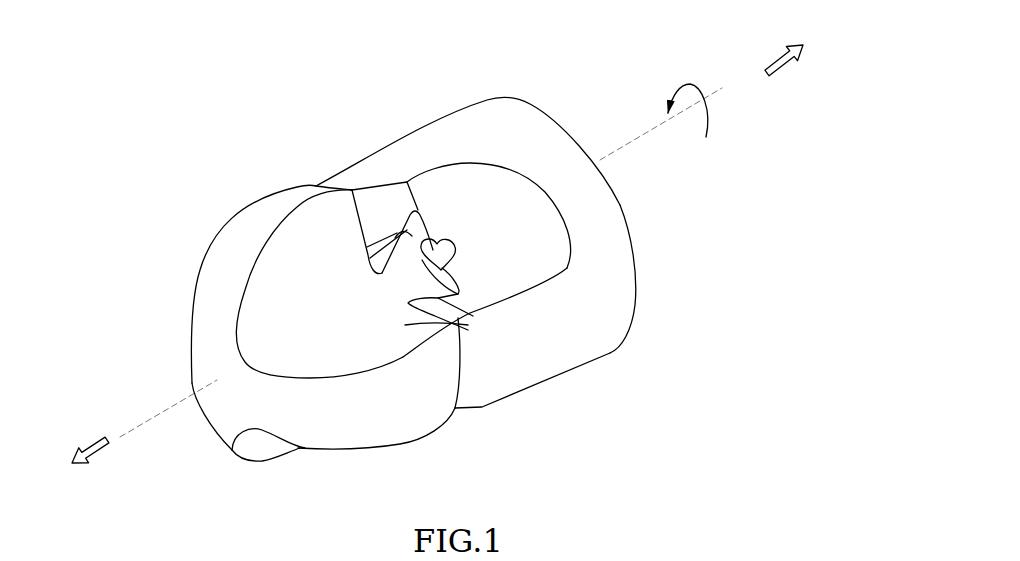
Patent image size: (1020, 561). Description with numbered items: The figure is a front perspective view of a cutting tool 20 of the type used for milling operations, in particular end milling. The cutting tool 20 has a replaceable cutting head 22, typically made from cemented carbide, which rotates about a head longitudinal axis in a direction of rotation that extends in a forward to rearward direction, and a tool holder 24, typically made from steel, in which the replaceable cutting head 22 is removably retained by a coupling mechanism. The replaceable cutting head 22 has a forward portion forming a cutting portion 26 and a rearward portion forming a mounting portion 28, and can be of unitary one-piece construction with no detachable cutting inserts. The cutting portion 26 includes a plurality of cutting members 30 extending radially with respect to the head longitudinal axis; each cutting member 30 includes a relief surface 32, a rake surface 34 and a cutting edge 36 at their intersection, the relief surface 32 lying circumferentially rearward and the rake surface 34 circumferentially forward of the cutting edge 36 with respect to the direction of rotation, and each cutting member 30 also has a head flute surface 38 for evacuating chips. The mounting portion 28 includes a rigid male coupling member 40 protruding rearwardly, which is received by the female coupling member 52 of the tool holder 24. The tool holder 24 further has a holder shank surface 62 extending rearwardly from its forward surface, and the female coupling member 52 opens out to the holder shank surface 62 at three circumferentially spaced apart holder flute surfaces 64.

The cutting tool 20 is at (634, 87).
The replaceable cutting head 22 is at (209, 192).
The tool holder 24 is at (645, 197).
The cutting portion 26 is at (159, 298).
The mounting portion 28 is at (382, 233).
The cutting member 30 is at (278, 180).
The relief surface 32 is at (227, 269).
The rake surface 34 is at (383, 347).
The cutting edge 36 is at (199, 272).
The head flute surface 38 is at (460, 323).
The male coupling member 40 is at (468, 298).
The female coupling member 52 is at (422, 198).
The holder shank surface 62 is at (620, 282).
The holder flute surface 64 is at (487, 189).